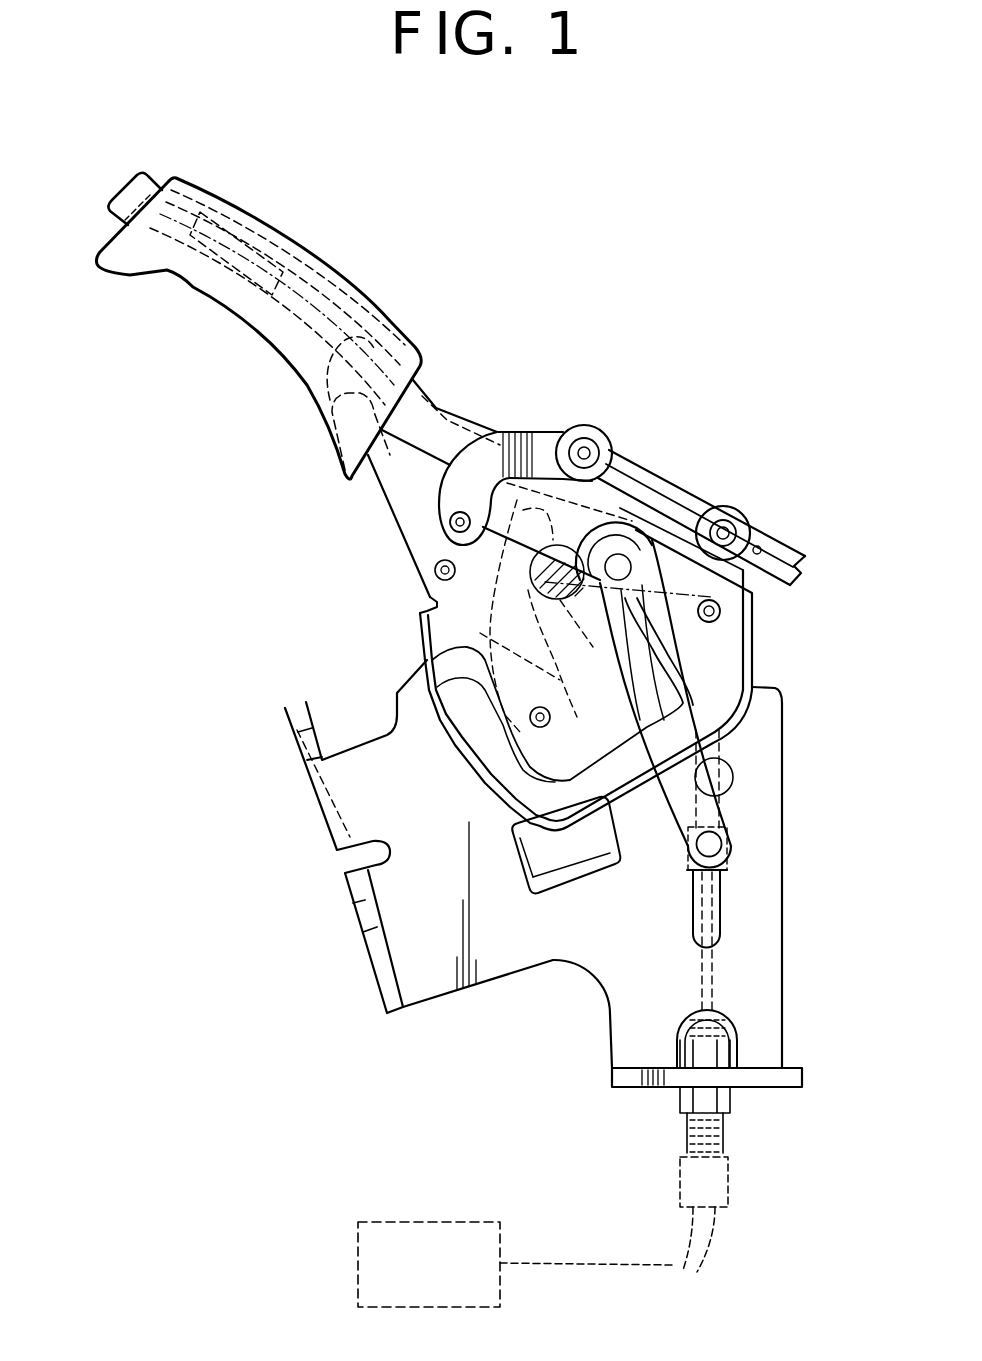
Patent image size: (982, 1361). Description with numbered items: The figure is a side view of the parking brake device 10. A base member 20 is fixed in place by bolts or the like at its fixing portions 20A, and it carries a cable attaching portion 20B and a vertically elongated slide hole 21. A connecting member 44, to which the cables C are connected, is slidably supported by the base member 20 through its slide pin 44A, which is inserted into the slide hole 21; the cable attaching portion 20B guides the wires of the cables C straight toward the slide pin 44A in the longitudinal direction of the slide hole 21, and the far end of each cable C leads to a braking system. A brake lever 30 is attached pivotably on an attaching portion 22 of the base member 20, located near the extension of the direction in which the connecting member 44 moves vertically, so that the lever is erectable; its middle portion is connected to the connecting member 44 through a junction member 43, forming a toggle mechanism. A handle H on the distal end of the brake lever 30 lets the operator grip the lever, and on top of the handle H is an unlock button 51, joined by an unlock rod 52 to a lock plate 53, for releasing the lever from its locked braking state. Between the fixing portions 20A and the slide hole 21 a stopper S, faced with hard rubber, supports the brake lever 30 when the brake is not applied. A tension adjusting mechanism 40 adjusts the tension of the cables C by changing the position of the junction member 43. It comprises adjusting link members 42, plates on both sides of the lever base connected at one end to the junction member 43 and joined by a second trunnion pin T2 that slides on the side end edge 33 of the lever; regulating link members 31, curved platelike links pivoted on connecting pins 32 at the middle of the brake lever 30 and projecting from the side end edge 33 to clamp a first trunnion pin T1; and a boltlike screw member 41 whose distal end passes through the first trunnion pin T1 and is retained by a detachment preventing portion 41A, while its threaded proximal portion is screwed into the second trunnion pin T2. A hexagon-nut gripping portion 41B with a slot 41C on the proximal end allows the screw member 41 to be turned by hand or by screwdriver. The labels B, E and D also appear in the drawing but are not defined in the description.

The parking brake device 10 is at (584, 277).
The base member 20 is at (357, 793).
The fixing portion 20A is at (296, 707).
The cable attaching portion 20B is at (793, 1068).
The slide hole 21 is at (717, 917).
The attaching portion 22 is at (721, 609).
The brake lever 30 is at (447, 405).
The regulating link member 31 is at (513, 432).
The connecting pin 32 is at (440, 521).
The side end edge 33 is at (477, 430).
The tension adjusting mechanism 40 is at (767, 610).
The screw member 41 is at (672, 497).
The detachment preventing portion 41A is at (563, 427).
The gripping portion 41B is at (773, 537).
The slot 41C is at (803, 573).
The adjusting link member 42 is at (632, 492).
The junction member 43 is at (748, 690).
The connecting member 44 is at (740, 862).
The slide pin 44A is at (722, 843).
The unlock button 51 is at (152, 185).
The unlock rod 52 is at (368, 340).
The lock plate 53 is at (424, 601).
The handle H is at (298, 258).
The lever operating direction B is at (278, 172).
The brake mechanism E is at (732, 418).
The cable pulling direction D is at (743, 743).
The first trunnion pin T1 is at (590, 450).
The second trunnion pin T2 is at (730, 513).
The stopper S is at (570, 853).
The cable C is at (717, 1187).